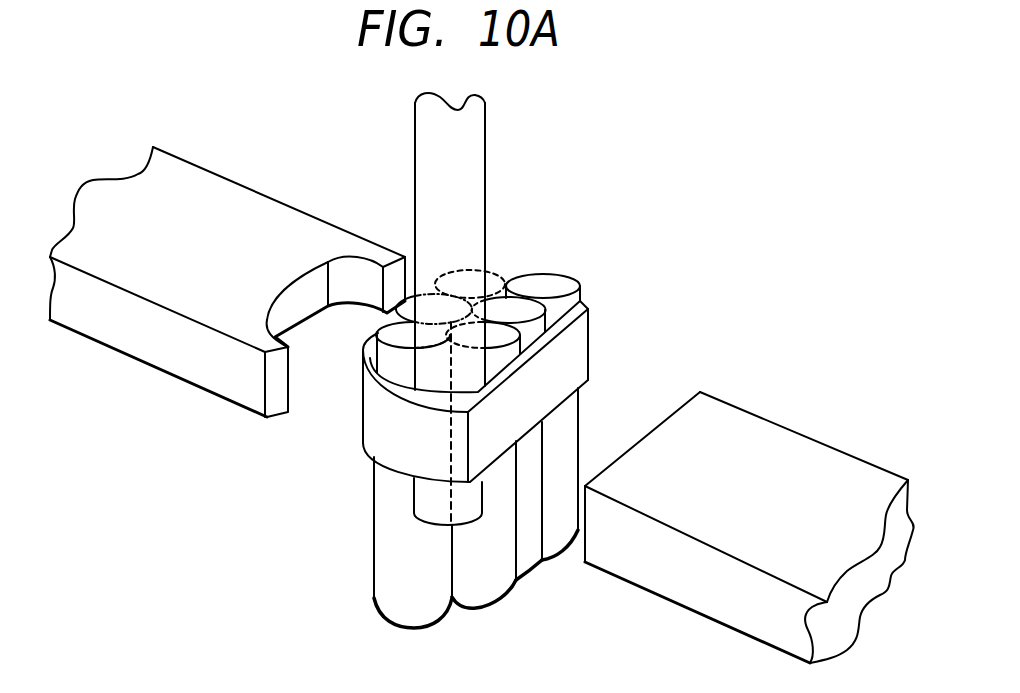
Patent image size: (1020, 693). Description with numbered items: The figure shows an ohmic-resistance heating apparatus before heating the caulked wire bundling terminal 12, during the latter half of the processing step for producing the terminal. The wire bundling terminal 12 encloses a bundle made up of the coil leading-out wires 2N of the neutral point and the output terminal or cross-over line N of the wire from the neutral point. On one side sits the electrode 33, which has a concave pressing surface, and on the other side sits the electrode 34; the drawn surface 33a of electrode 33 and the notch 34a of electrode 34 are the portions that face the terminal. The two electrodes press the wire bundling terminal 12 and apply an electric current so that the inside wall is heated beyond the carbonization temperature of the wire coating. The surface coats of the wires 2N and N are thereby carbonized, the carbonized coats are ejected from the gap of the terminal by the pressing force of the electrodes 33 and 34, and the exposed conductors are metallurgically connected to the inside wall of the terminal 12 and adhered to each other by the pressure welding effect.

The output terminal N is at (477, 177).
The coil leading-out wires 2N is at (525, 562).
The wire bundling terminal 12 is at (583, 358).
The electrode 33 is at (749, 497).
The holding surface of block 33 33a is at (692, 392).
The electrode 34 is at (227, 293).
The semicircular notch of block 34 34a is at (300, 310).